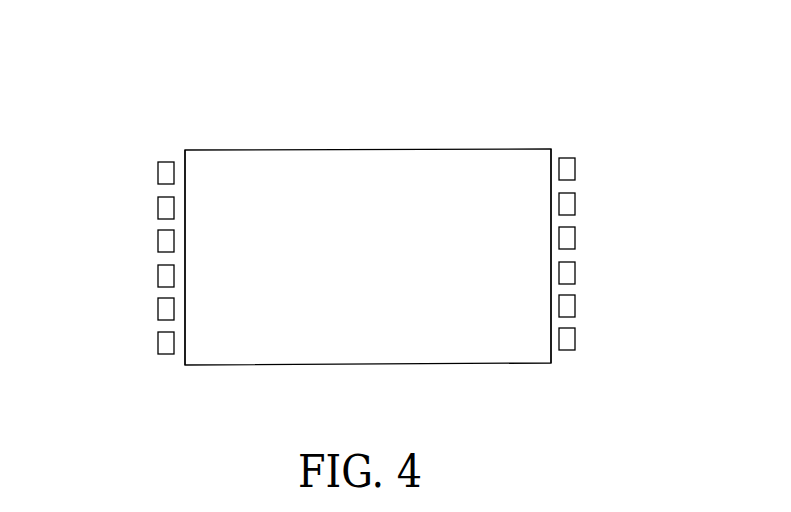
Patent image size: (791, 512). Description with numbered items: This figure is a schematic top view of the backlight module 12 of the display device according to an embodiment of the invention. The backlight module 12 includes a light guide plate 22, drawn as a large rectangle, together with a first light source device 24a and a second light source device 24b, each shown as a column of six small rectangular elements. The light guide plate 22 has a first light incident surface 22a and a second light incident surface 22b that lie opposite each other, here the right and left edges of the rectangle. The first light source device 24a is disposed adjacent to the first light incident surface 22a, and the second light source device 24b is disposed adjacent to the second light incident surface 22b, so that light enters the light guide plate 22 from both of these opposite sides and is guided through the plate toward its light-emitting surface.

The backlight module 12 is at (108, 54).
The light guide plate 22 is at (368, 169).
The first light incident surface 22a is at (553, 166).
The second light incident surface 22b is at (185, 340).
The first light source device 24a is at (575, 272).
The second light source device 24b is at (158, 242).